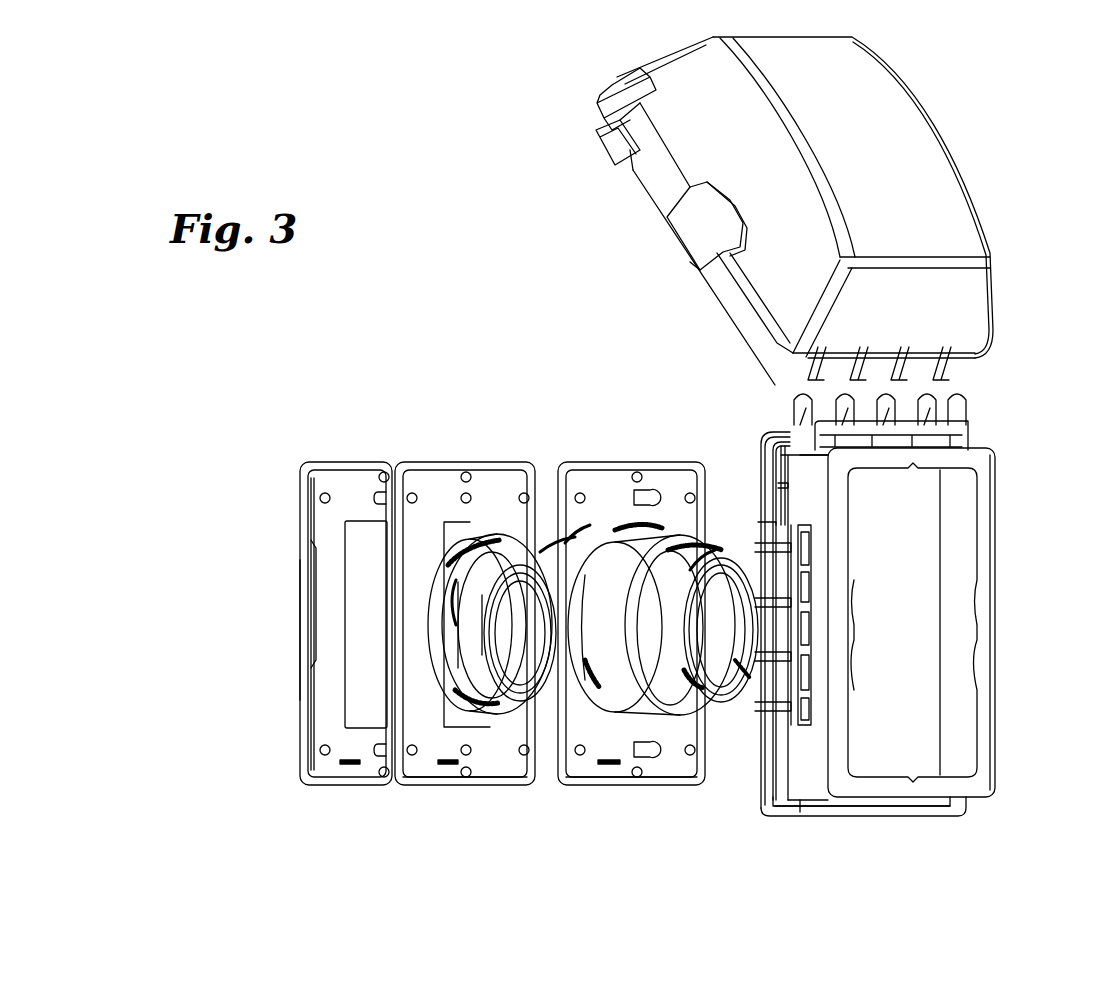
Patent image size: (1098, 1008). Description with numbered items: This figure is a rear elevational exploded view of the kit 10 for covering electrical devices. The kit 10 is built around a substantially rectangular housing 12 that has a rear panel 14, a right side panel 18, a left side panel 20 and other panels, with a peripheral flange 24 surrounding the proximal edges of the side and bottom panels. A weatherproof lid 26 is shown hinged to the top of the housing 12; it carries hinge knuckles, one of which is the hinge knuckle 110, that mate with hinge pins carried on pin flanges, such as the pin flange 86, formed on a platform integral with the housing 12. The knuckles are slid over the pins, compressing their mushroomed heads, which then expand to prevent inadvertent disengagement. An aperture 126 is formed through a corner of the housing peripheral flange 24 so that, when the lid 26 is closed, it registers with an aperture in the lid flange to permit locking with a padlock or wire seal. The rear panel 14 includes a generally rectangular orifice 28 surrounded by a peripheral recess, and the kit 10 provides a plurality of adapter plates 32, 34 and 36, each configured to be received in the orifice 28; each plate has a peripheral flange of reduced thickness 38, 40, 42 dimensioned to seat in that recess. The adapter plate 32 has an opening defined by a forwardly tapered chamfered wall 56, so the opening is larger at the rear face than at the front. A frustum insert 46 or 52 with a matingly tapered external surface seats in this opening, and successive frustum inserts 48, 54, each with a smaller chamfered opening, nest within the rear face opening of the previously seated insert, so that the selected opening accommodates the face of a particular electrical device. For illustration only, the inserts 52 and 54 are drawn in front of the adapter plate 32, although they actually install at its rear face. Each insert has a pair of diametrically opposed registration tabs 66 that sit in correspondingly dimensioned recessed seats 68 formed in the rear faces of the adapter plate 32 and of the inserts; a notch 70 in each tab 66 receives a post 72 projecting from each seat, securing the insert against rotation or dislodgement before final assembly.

The kit 10 is at (484, 372).
The housing 12 is at (905, 631).
The rear panel 14 is at (990, 518).
The right side panel 18 is at (808, 733).
The left side panel 20 is at (960, 562).
The peripheral flange 24 is at (858, 808).
The weatherproof lid 26 is at (828, 211).
The orifice 28 is at (985, 693).
The adapter plate 32 is at (678, 462).
The adapter plate 34 is at (468, 462).
The adapter plate 36 is at (354, 462).
The peripheral flange of reduced thickness 38 is at (590, 787).
The peripheral flange of reduced thickness 40 is at (432, 787).
The peripheral flange of reduced thickness 42 is at (300, 735).
The frustum insert 46 is at (705, 700).
The frustum insert 48 is at (738, 690).
The frustum insert 52 is at (498, 706).
The frustum insert 54 is at (539, 700).
The chamfered wall 56 is at (657, 712).
The registration tab 66 is at (575, 532).
The recessed seat 68 is at (470, 590).
The notch 70 is at (456, 560).
The post 72 is at (463, 625).
The pin flange 86 is at (800, 398).
The hinge knuckle 110 is at (810, 372).
The aperture 126 is at (822, 795).